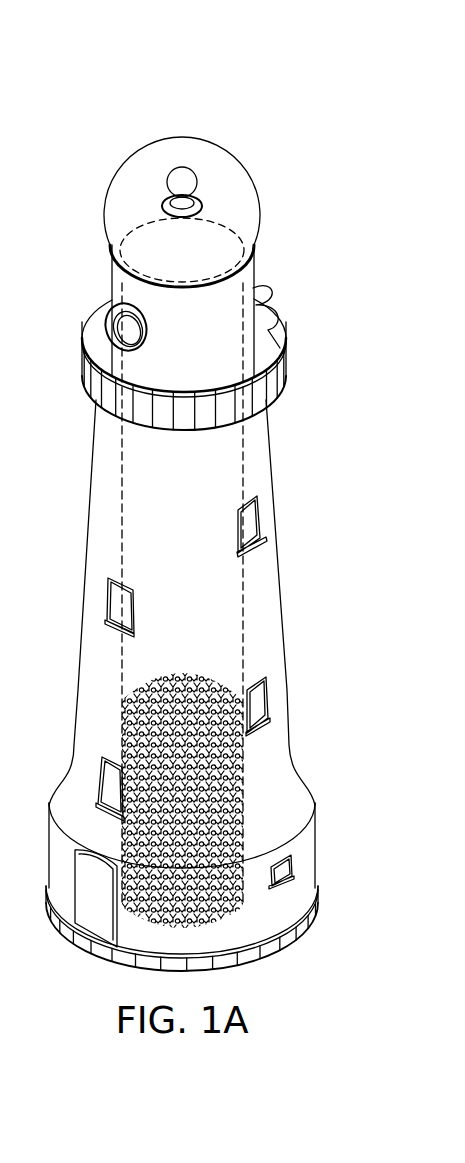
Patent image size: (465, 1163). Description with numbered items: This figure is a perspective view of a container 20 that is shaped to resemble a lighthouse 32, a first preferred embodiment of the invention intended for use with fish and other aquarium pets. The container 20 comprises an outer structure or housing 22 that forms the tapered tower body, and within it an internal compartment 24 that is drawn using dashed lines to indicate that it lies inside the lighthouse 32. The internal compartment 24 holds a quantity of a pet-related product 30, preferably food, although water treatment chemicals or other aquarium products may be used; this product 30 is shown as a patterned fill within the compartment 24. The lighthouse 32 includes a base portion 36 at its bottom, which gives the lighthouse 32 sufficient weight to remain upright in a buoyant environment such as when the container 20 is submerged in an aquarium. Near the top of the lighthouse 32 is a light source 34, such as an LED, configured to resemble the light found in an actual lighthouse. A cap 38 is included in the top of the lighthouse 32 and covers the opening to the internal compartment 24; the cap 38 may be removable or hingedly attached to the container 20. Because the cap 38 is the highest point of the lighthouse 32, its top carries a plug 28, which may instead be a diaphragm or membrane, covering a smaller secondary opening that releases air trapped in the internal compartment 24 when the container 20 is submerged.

The container 20 is at (149, 55).
The outer structure 22 is at (90, 503).
The internal compartment 24 is at (170, 531).
The plug 28 is at (187, 176).
The pet-related product 30 is at (170, 838).
The lighthouse 32 is at (205, 68).
The light source 34 is at (107, 320).
The base portion 36 is at (284, 905).
The cap 38 is at (137, 208).